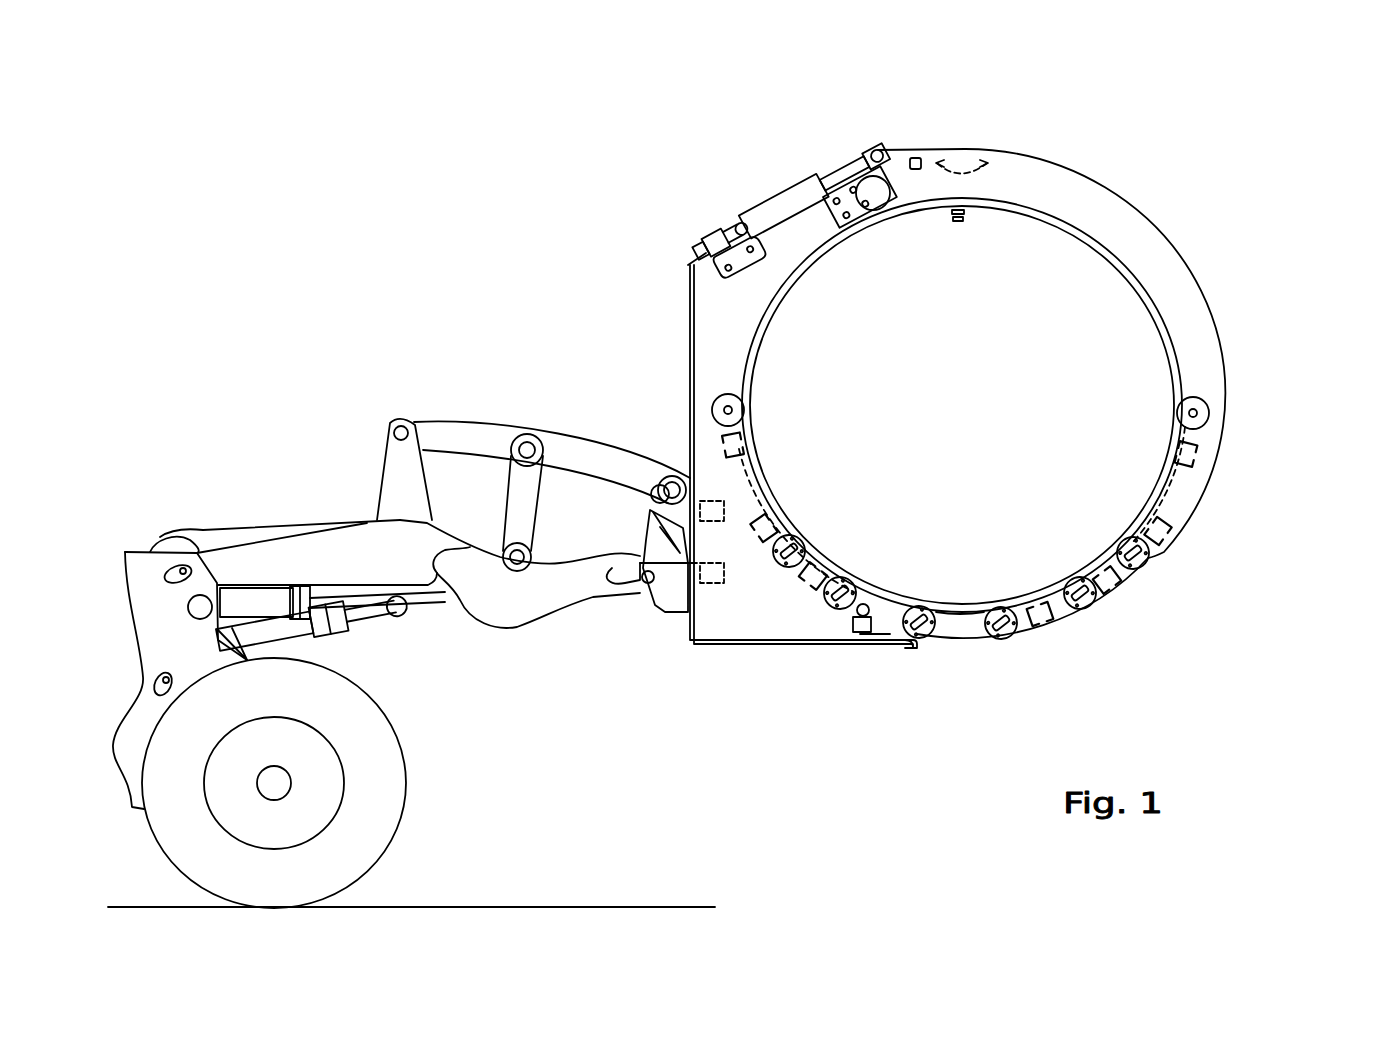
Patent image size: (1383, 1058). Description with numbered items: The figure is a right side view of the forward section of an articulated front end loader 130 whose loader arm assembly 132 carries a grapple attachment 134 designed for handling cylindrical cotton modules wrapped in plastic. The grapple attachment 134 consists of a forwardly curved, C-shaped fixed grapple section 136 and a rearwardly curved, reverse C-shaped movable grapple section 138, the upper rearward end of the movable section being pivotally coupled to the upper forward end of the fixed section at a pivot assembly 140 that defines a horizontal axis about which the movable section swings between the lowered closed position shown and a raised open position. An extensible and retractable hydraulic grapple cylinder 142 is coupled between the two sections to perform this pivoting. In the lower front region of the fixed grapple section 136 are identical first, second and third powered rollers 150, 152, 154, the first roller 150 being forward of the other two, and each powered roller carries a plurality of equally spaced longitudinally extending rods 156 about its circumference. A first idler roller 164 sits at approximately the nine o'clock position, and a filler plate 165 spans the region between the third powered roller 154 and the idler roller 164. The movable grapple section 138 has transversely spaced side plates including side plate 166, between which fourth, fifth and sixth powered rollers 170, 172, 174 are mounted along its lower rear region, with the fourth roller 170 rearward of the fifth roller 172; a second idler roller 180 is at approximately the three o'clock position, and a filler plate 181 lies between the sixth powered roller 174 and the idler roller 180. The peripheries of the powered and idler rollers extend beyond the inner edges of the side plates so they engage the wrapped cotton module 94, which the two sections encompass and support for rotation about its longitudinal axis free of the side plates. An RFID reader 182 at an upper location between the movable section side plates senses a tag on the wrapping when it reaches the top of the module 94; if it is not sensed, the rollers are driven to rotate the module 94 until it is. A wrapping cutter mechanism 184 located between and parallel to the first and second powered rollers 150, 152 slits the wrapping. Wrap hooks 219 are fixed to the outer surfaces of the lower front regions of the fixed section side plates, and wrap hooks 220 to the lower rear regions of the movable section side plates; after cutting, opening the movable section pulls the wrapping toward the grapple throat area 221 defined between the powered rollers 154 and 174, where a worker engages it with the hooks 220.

The wrapped cotton module 94 is at (980, 416).
The front end loader 130 is at (178, 494).
The loader arm assembly 132 is at (465, 655).
The grapple attachment 134 is at (1145, 184).
The fixed grapple section 136 is at (743, 655).
The movable grapple section 138 is at (1232, 328).
The pivot assembly 140 is at (875, 196).
The hydraulic grapple cylinder 142 is at (770, 198).
The first powered roller 150 is at (918, 608).
The second powered roller 152 is at (845, 588).
The third powered roller 154 is at (799, 544).
The longitudinally extending rods 156 is at (955, 610).
The first idler roller 164 is at (741, 405).
The filler plate 165 is at (768, 492).
The side plate 166 is at (1147, 245).
The fourth powered roller 170 is at (1001, 609).
The fifth powered roller 172 is at (1090, 597).
The sixth powered roller 174 is at (1150, 556).
The second idler roller 180 is at (1210, 414).
The filler plate 181 is at (1140, 495).
The RFID reader 182 is at (962, 163).
The wrapping cutter mechanism 184 is at (830, 635).
The wrap hooks 219 is at (905, 650).
The wrap hooks 220 is at (1024, 627).
The grapple throat area 221 is at (917, 643).